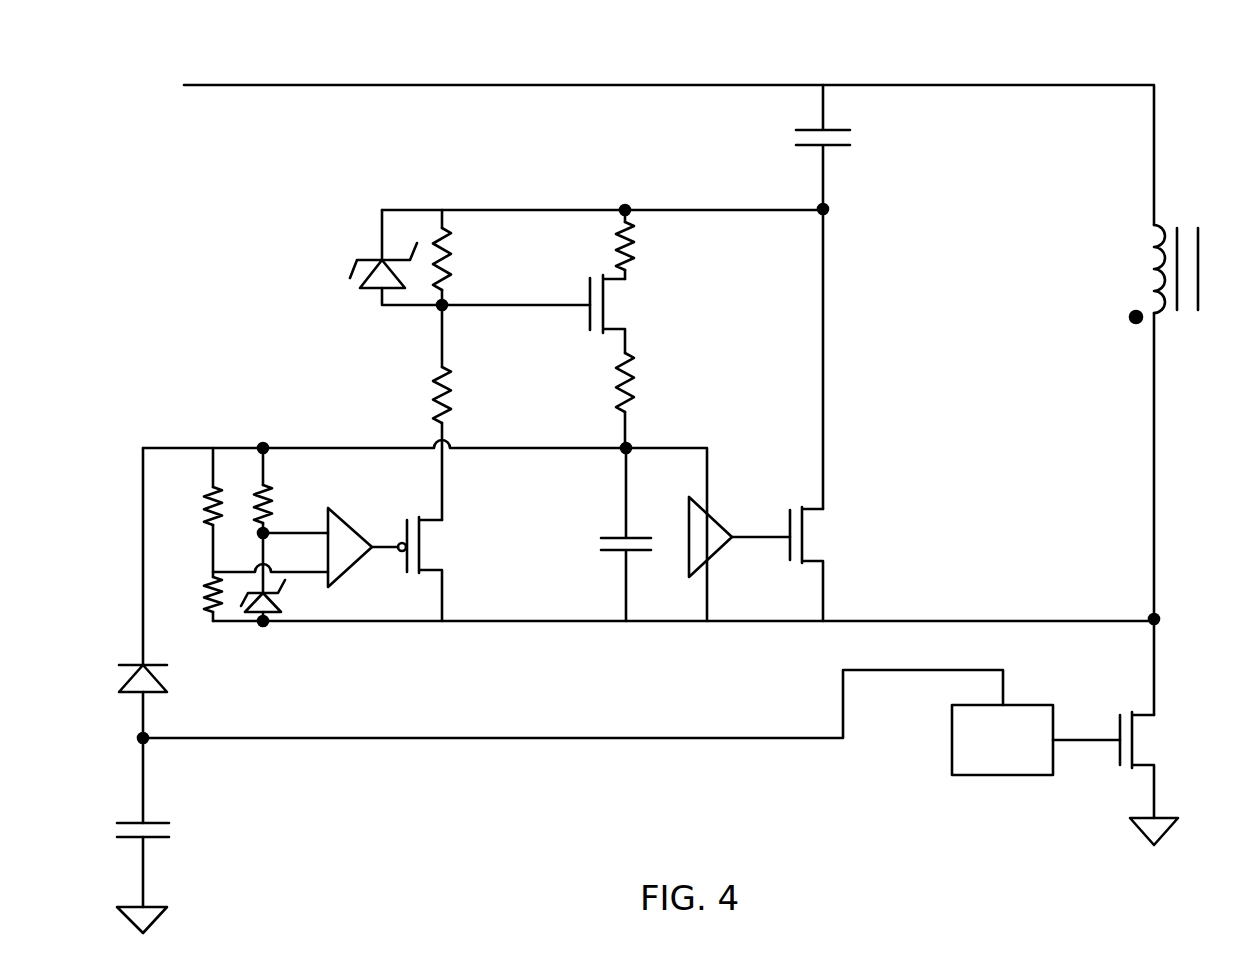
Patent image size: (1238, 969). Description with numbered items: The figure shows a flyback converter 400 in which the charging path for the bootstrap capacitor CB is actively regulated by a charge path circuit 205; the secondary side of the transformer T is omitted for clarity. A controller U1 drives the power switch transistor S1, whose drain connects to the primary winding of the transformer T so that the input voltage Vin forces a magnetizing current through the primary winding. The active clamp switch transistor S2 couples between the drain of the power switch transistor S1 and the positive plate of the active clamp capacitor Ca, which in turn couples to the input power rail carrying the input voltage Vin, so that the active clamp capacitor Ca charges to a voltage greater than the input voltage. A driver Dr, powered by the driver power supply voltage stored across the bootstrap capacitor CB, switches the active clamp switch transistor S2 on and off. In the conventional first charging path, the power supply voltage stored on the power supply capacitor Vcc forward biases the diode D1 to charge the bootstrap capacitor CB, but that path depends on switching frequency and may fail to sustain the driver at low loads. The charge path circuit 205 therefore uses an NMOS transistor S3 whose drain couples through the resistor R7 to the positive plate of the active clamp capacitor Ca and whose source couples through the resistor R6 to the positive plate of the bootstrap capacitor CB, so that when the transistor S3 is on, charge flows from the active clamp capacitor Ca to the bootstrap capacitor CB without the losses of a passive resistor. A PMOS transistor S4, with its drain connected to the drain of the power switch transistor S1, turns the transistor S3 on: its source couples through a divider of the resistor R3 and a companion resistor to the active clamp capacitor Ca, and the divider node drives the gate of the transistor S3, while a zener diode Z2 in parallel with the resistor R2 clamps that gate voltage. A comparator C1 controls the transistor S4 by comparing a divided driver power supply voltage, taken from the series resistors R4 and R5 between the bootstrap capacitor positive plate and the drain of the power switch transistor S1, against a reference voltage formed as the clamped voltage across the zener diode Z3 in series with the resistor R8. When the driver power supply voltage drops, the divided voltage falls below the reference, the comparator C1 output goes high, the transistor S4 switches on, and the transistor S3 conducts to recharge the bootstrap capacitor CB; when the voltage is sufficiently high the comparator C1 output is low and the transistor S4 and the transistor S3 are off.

The flyback converter 400 is at (703, 41).
The charge path circuit 205 is at (284, 356).
The input voltage Vin is at (669, 138).
The active clamp capacitor Ca is at (841, 297).
The transformer T is at (1164, 261).
The zener diode Z2 is at (383, 257).
The resistor R2 is at (511, 288).
The resistor R3 is at (465, 443).
The resistor R7 is at (644, 244).
The NMOS transistor S3 is at (623, 314).
The resistor R6 is at (647, 400).
The diode D1 is at (162, 685).
The power supply capacitor Vcc is at (155, 829).
The resistor R4 is at (200, 512).
The resistor R5 is at (200, 599).
The resistor R8 is at (282, 490).
The zener diode Z3 is at (279, 577).
The comparator C1 is at (367, 564).
The PMOS transistor S4 is at (444, 569).
The bootstrap capacitor CB is at (643, 534).
The driver Dr is at (739, 537).
The active clamp switch transistor S2 is at (824, 564).
The controller U1 is at (1036, 740).
The power switch transistor S1 is at (1153, 778).